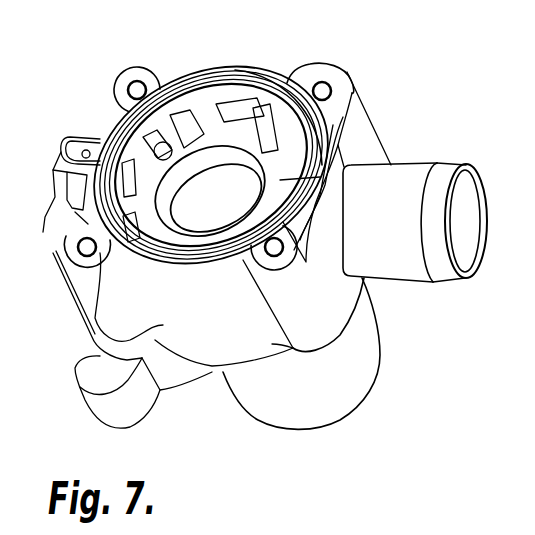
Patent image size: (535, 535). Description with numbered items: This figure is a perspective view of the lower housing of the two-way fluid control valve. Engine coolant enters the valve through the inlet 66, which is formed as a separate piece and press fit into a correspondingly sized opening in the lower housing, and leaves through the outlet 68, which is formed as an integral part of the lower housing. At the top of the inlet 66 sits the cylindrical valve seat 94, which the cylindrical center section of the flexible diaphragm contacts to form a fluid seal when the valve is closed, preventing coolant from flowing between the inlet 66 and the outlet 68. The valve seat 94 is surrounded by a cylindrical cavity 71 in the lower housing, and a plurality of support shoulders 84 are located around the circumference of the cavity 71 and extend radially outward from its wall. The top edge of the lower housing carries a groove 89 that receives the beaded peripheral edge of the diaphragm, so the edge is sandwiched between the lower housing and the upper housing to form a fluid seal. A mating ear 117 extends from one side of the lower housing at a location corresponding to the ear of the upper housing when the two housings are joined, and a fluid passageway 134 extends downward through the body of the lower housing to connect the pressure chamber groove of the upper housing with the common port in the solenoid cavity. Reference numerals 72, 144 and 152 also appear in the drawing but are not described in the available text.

The inlet 66 is at (378, 358).
The outlet 68 is at (399, 277).
The cylindrical cavity 71 is at (202, 110).
The lower housing protrusion 72 is at (88, 332).
The support shoulders 84 is at (240, 103).
The groove 89 is at (343, 69).
The cylindrical valve seat 94 is at (350, 140).
The mating ear 117 is at (73, 157).
The fluid passageway 134 is at (86, 150).
The housing rib edge 144 is at (90, 318).
The lower component 152 is at (306, 534).